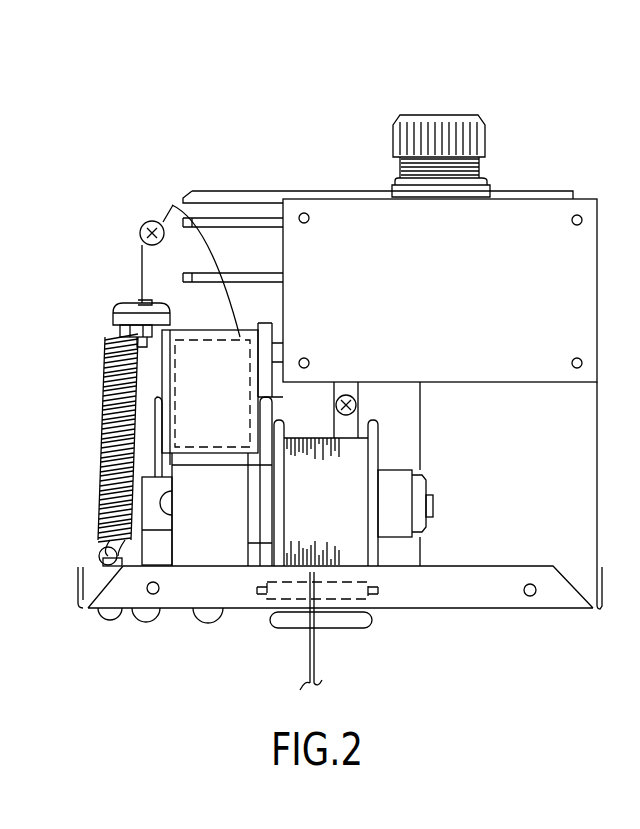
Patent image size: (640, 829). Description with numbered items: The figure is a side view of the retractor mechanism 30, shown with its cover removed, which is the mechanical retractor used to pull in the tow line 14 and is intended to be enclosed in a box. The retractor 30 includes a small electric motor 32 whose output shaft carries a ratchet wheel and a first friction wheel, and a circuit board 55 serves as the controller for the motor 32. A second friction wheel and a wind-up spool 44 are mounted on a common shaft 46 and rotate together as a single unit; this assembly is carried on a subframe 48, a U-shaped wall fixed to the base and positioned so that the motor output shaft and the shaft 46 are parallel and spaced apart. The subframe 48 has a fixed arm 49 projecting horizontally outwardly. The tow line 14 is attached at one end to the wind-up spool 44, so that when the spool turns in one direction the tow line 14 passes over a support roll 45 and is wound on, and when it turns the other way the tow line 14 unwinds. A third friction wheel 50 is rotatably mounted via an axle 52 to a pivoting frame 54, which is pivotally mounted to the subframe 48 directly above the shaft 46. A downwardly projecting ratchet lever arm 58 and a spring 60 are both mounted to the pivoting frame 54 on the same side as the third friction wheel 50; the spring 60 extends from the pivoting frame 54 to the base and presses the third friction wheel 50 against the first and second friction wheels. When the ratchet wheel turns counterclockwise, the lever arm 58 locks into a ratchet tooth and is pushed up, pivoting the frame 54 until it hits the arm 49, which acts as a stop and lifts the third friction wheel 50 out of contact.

The retractor mechanism 30 is at (541, 84).
The electric motor 32 is at (552, 193).
The circuit board 55 is at (370, 213).
The pivoting frame 54 is at (172, 205).
The third friction wheel 50 is at (202, 357).
The ratchet lever arm 58 is at (150, 373).
The axle 52 is at (157, 413).
The spring 60 is at (97, 495).
The fixed arm 49 is at (207, 462).
The subframe 48 is at (232, 557).
The wind-up spool 44 is at (352, 462).
The common shaft 46 is at (433, 508).
The support roll 45 is at (370, 600).
The tow line 14 is at (313, 658).